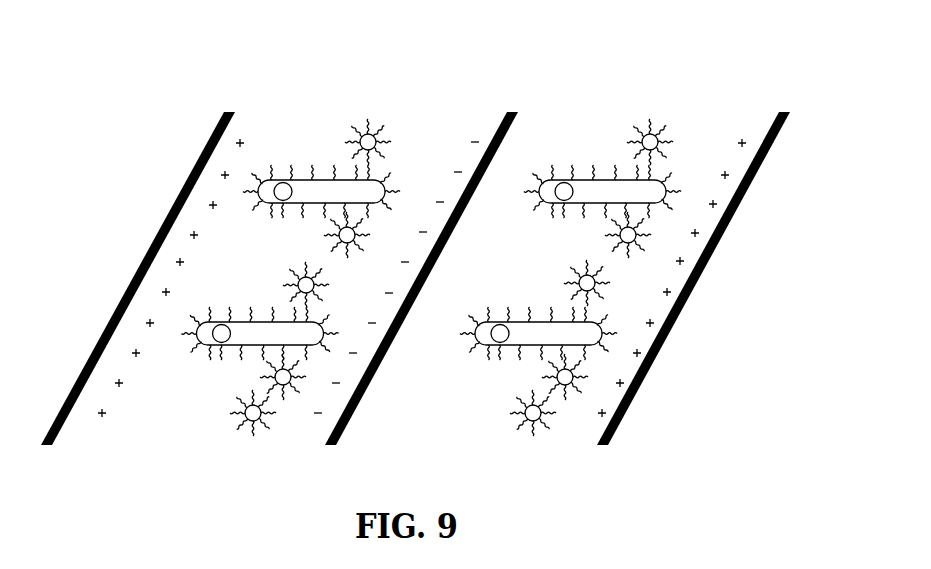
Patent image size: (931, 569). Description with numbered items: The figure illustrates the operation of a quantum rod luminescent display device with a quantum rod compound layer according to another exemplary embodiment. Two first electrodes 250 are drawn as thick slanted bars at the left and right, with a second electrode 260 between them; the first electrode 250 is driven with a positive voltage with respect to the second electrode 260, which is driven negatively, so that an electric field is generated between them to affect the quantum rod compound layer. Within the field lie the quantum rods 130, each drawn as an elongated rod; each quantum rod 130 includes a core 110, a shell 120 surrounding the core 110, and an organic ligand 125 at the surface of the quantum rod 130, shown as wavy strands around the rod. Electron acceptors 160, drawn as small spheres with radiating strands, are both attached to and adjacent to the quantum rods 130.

The core 110 is at (285, 189).
The shell 120 is at (305, 188).
The organic ligand 125 is at (324, 160).
The quantum rod 130 is at (311, 125).
The electron acceptor 160 is at (381, 125).
The first electrode 250 is at (216, 134).
The second electrode 260 is at (516, 112).